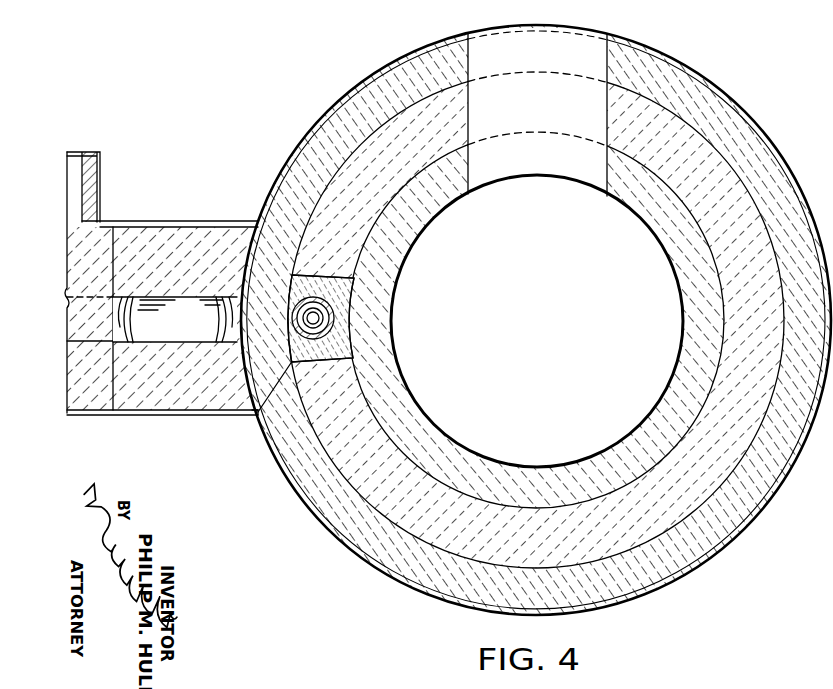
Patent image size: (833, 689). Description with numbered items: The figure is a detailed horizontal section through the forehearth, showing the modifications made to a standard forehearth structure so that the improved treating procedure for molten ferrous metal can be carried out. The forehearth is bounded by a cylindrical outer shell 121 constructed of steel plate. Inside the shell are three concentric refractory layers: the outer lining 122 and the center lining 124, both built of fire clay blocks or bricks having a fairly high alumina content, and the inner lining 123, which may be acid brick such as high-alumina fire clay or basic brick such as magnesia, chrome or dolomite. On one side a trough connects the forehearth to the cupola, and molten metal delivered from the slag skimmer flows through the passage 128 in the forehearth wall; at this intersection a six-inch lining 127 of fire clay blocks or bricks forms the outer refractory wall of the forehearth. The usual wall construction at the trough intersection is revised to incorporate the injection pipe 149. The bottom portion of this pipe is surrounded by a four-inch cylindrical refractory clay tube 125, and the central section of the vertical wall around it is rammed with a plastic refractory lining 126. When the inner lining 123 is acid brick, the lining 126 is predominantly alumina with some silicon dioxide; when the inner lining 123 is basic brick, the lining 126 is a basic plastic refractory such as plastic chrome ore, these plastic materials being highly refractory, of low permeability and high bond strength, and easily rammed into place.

The outer shell 121 is at (298, 498).
The outer lining 122 is at (447, 575).
The inner lining 123 is at (677, 393).
The center lining 124 is at (397, 513).
The cylindrical refractory clay tube 125 is at (335, 321).
The plastic refractory lining 126 is at (340, 297).
The side wall lining 127 is at (255, 262).
The passage 128 is at (213, 297).
The injection pipe 149 is at (258, 412).